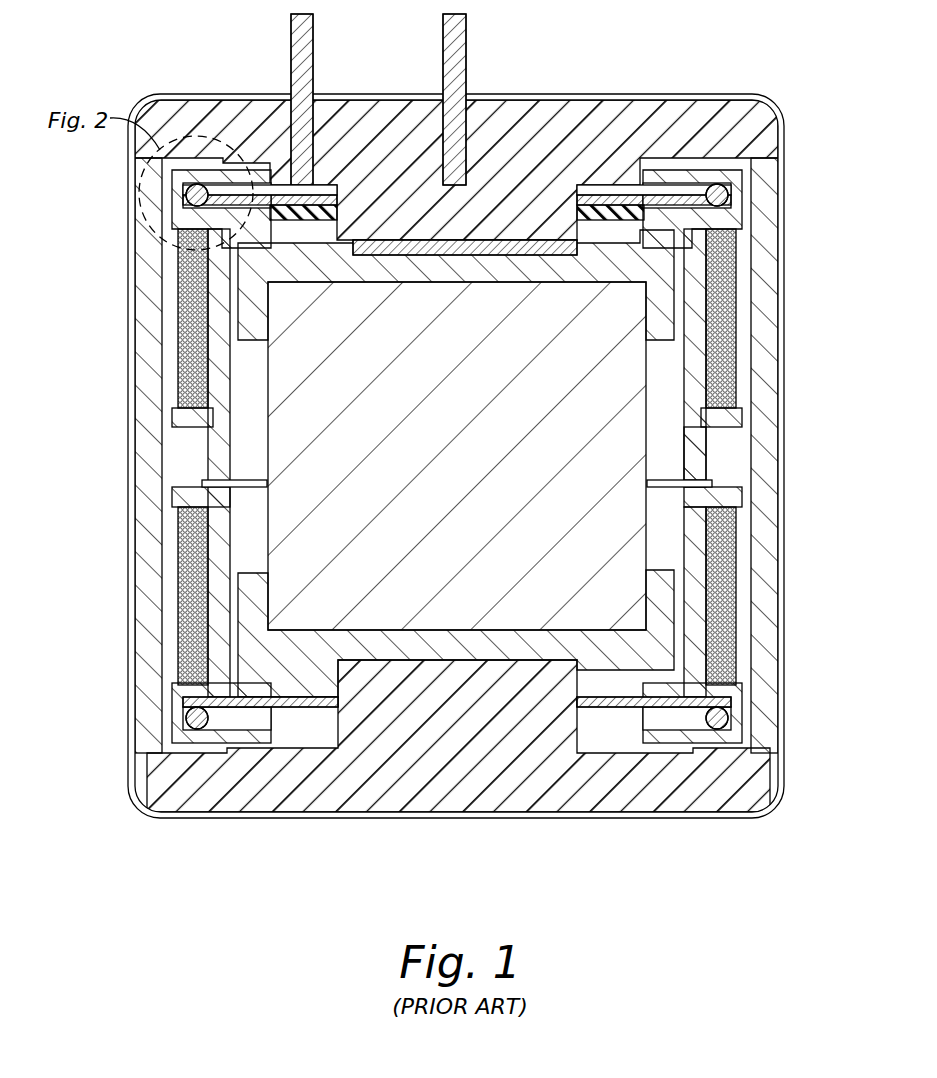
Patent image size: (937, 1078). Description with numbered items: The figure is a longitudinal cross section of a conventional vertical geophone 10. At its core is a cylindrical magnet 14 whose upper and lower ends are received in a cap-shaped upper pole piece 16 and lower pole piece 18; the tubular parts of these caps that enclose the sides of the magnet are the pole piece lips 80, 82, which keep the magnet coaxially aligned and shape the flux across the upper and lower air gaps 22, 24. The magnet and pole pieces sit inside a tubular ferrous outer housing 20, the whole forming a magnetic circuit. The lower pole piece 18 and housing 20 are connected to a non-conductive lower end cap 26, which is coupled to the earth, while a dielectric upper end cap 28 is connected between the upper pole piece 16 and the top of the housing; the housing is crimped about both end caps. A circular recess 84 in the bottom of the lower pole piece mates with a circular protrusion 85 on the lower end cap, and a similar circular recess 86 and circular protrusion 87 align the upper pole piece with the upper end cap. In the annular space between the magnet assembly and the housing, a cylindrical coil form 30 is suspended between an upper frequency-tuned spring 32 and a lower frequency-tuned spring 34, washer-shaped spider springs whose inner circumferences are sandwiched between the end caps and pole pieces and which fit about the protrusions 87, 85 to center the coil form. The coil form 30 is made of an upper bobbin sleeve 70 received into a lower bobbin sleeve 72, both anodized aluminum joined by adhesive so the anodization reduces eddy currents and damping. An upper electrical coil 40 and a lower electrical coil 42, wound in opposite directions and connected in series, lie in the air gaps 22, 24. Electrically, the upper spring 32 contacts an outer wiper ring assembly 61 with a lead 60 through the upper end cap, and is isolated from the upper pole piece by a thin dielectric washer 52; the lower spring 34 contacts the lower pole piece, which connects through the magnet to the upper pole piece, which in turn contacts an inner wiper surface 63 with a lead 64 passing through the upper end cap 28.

The vertical geophone 10 is at (138, 26).
The cylindrical magnet 14 is at (262, 377).
The upper pole piece 16 is at (240, 278).
The lower pole piece 18 is at (238, 652).
The outer housing 20 is at (160, 541).
The upper air gap 22 is at (168, 310).
The lower air gap 24 is at (170, 593).
The lower end cap 26 is at (455, 800).
The upper end cap 28 is at (590, 118).
The coil form 30 is at (718, 462).
The upper frequency-tuned spring 32 is at (583, 205).
The lower frequency-tuned spring 34 is at (318, 707).
The upper electrical coil 40 is at (726, 315).
The lower electrical coil 42 is at (722, 600).
The dielectric washer 52 is at (308, 232).
The lead 60 is at (313, 40).
The outer wiper ring assembly 61 is at (612, 195).
The inner wiper surface 63 is at (412, 250).
The lead 64 is at (466, 40).
The upper bobbin sleeve 70 is at (180, 415).
The lower bobbin sleeve 72 is at (180, 497).
The upper pole piece lip 80 is at (690, 365).
The lower pole piece lip 82 is at (690, 548).
The circular recess 84 is at (358, 660).
The circular protrusion 85 is at (338, 668).
The circular recess 86 is at (563, 243).
The circular protrusion 87 is at (607, 285).